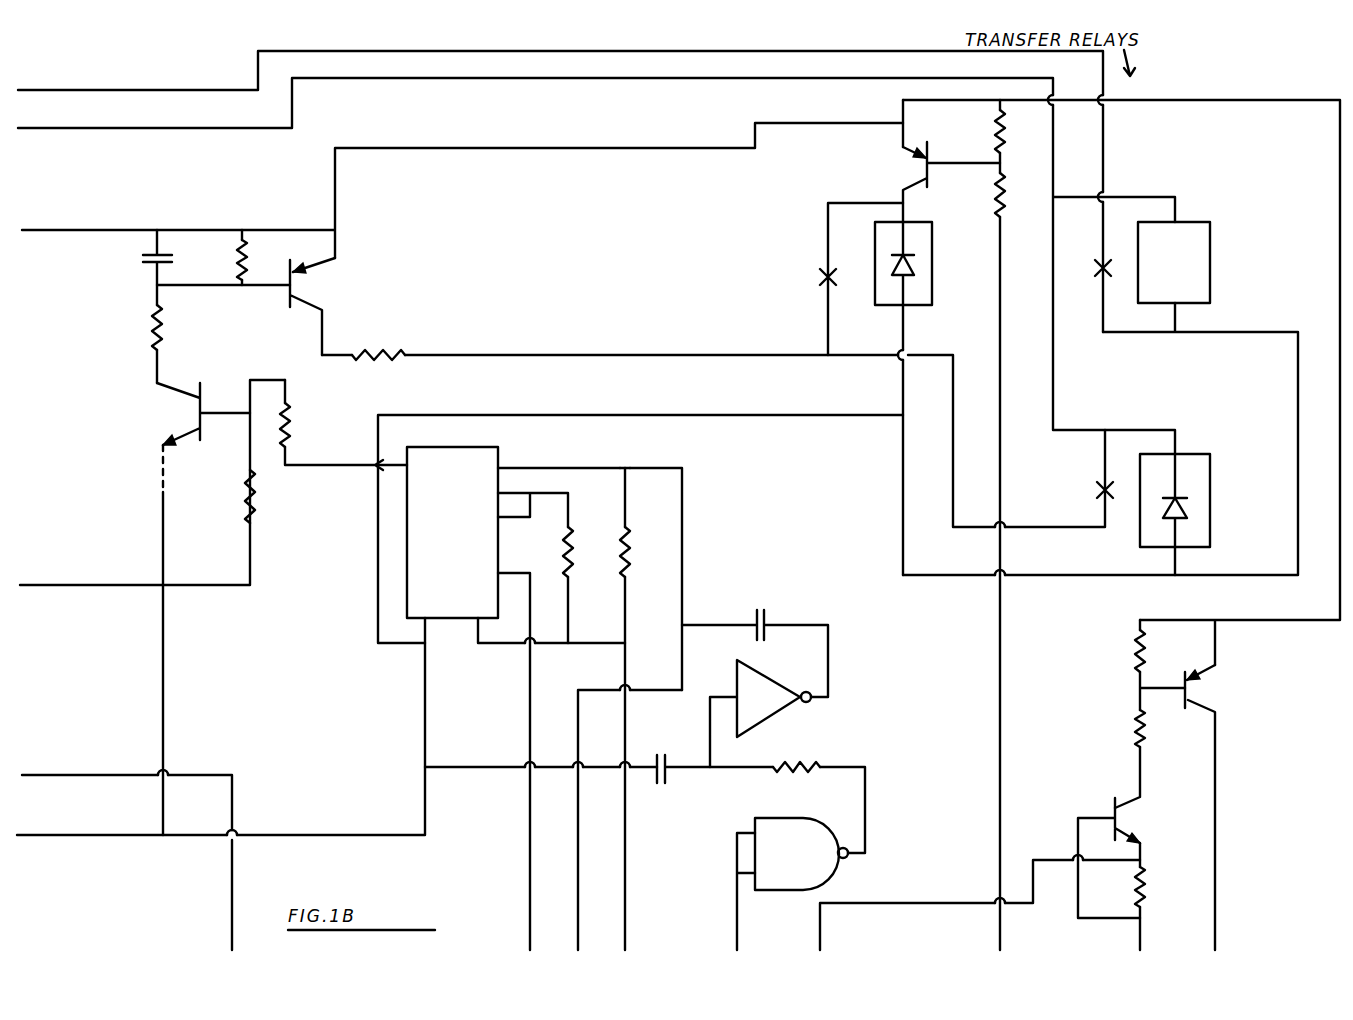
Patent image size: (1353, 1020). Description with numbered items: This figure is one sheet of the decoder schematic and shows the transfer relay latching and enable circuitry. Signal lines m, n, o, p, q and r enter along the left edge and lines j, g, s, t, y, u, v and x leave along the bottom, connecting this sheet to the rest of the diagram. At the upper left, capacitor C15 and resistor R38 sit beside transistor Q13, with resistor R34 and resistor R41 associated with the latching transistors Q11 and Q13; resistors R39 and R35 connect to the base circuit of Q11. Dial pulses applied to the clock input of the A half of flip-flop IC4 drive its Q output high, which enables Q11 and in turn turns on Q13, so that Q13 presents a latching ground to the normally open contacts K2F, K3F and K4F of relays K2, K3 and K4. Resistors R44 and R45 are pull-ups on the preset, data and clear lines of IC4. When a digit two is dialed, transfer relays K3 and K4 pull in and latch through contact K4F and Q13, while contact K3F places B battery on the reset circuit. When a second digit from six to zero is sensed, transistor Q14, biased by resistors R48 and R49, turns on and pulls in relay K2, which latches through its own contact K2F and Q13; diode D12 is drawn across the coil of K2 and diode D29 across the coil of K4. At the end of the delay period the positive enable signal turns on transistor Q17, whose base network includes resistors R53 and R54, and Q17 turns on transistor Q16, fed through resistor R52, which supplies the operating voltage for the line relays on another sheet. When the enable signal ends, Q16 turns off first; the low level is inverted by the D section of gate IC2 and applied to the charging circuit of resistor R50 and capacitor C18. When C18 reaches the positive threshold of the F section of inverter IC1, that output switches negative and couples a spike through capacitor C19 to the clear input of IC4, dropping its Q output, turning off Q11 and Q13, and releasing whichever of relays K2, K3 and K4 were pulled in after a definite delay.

The input line m is at (560, 191).
The input line n is at (596, 266).
The input line o is at (462, 190).
The input line p is at (152, 482).
The line q is at (127, 852).
The line r is at (221, 726).
The terminal j is at (516, 940).
The terminal g is at (621, 817).
The terminal s is at (617, 940).
The terminal t is at (717, 934).
The terminal y is at (970, 902).
The terminal u is at (988, 940).
The terminal v is at (1126, 948).
The terminal x is at (1201, 946).
The capacitor 10 MF C15 is at (216, 257).
The resistor 10K R38 is at (262, 257).
The transistor Q13 is at (317, 306).
The resistor 2.2K R34 is at (182, 334).
The resistor 150 ohm R41 is at (713, 417).
The transistor Q11 is at (187, 609).
The resistor 5.1K R39 is at (331, 425).
The resistor 10K R35 is at (271, 496).
The flip-flop IC4 is at (640, 682).
The resistor 10K R44 is at (587, 585).
The resistor 10K R45 is at (644, 709).
The capacitor C19 is at (755, 636).
The inverter IC1 is at (760, 713).
The capacitor C18 is at (706, 752).
The resistor R50 is at (819, 790).
The gate IC2 is at (792, 873).
The transistor Q14 is at (928, 182).
The resistor 2.2K R48 is at (1021, 136).
The resistor 4.7K R49 is at (1021, 560).
The relay K2 is at (905, 388).
The diode D12 is at (932, 263).
The contact K2F is at (833, 279).
The transfer relay K3 is at (1100, 383).
The contact K3F is at (1086, 270).
The transfer relay K4 is at (1178, 500).
The contact K4F is at (1085, 491).
The diode D29 is at (1206, 500).
The resistor 2.2K R52 is at (1163, 665).
The transistor Q16 is at (1214, 807).
The resistor 4.7K R53 is at (1153, 759).
The transistor Q17 is at (1123, 858).
The resistor 10K R54 is at (1160, 908).